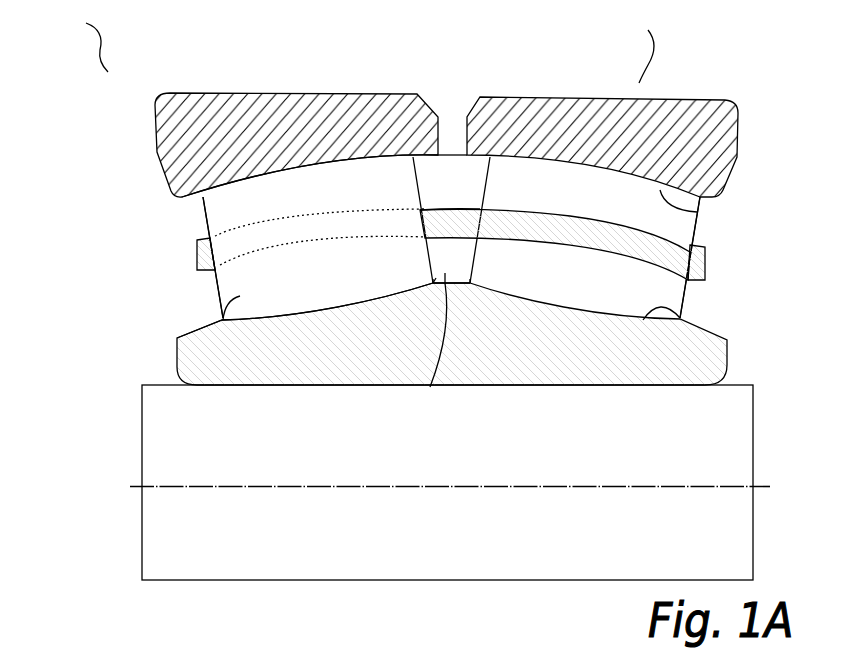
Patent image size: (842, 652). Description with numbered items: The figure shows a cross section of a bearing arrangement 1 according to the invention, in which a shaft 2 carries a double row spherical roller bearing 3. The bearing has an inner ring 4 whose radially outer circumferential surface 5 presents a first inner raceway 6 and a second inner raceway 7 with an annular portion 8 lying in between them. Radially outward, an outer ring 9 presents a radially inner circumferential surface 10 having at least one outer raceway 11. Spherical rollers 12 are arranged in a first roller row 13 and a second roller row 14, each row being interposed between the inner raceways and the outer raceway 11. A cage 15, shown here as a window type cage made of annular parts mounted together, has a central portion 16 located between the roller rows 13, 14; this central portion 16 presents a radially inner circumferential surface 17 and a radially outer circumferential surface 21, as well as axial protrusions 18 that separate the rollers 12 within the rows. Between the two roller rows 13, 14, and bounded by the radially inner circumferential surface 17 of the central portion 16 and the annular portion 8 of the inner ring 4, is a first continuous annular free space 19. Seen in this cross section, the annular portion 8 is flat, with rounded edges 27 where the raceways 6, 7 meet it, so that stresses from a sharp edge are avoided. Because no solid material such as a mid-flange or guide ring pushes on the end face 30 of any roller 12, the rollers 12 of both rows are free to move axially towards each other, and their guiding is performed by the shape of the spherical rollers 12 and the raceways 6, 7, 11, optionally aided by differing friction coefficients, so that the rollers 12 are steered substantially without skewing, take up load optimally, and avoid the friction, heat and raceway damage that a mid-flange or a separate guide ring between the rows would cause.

The bearing arrangement 1 is at (90, 43).
The shaft 2 is at (158, 446).
The double row spherical roller bearing 3 is at (641, 50).
The inner ring 4 is at (185, 347).
The radially outer circumferential surface 5 is at (193, 330).
The first inner raceway 6 is at (270, 318).
The second inner raceway 7 is at (680, 316).
The annular portion 8 is at (463, 273).
The outer ring 9 is at (720, 116).
The radially inner circumferential surface 10 is at (473, 156).
The outer raceway 11 is at (697, 212).
The spherical rollers 12 is at (220, 203).
The first roller row 13 is at (157, 180).
The second roller row 14 is at (740, 186).
The cage 15 is at (694, 270).
The central portion 16 is at (462, 228).
The radially inner circumferential surface 17 is at (452, 240).
The axial protrusions 18 is at (572, 217).
The first continuous annular free space 19 is at (430, 387).
The radially outer circumferential surface 21 is at (470, 207).
The rounded edges 27 is at (433, 282).
The end face 30 is at (410, 178).